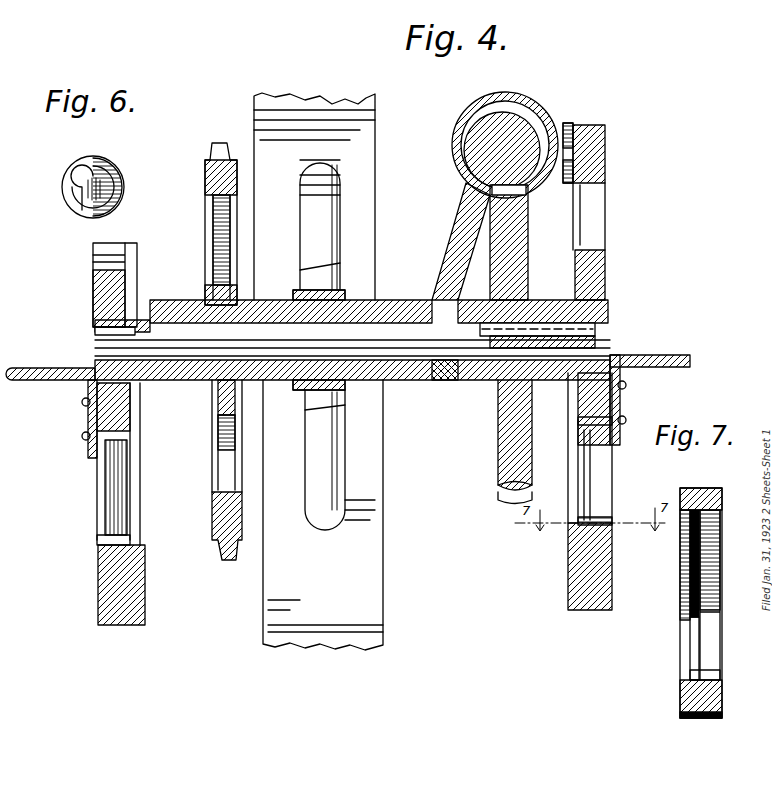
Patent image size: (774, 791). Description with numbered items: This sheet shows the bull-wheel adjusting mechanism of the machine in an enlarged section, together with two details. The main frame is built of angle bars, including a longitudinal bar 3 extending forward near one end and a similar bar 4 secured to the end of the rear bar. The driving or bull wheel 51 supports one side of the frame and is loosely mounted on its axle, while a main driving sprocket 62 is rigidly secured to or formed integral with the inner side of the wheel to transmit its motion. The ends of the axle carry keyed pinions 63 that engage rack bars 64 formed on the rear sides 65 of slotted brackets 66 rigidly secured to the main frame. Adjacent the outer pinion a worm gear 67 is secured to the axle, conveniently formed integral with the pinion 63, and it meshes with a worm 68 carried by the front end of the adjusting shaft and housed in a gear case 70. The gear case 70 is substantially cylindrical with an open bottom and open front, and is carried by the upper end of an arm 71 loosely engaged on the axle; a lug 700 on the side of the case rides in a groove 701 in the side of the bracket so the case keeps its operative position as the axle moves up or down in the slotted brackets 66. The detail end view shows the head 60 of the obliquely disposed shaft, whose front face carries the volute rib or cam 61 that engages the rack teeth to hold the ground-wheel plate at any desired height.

In FIG. 4, the longitudinal bar 3 is at (62, 354).
In FIG. 4, the bar 4 is at (655, 365).
In FIG. 4, the bull wheel 51 is at (365, 600).
In FIG. 6, the head 60 is at (75, 177).
In FIG. 4, the cam 61 is at (430, 380).
In FIG. 6, the cam 61 is at (82, 210).
In FIG. 4, the main driving sprocket 62 is at (212, 480).
In FIG. 4, the pinion 63 is at (125, 290).
In FIG. 4, the rack bar 64 is at (97, 540).
In FIG. 7, the rack bar 64 is at (690, 672).
In FIG. 4, the rear side 65 is at (130, 575).
In FIG. 7, the rear side 65 is at (722, 694).
In FIG. 4, the slotted bracket 66 is at (105, 492).
In FIG. 7, the slotted bracket 66 is at (714, 603).
In FIG. 4, the worm gear 67 is at (500, 437).
In FIG. 4, the worm 68 is at (525, 125).
In FIG. 4, the gear case 70 is at (548, 128).
In FIG. 4, the arm 71 is at (458, 236).
In FIG. 4, the lug 700 is at (568, 152).
In FIG. 4, the groove 701 is at (573, 175).
In FIG. 7, the groove 701 is at (688, 490).